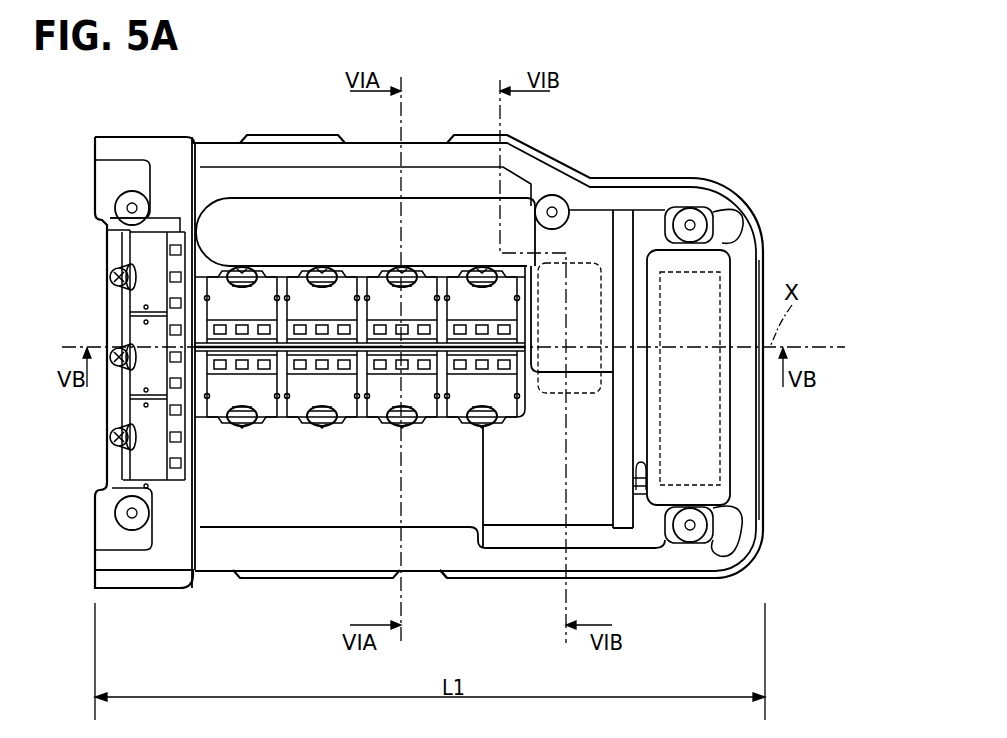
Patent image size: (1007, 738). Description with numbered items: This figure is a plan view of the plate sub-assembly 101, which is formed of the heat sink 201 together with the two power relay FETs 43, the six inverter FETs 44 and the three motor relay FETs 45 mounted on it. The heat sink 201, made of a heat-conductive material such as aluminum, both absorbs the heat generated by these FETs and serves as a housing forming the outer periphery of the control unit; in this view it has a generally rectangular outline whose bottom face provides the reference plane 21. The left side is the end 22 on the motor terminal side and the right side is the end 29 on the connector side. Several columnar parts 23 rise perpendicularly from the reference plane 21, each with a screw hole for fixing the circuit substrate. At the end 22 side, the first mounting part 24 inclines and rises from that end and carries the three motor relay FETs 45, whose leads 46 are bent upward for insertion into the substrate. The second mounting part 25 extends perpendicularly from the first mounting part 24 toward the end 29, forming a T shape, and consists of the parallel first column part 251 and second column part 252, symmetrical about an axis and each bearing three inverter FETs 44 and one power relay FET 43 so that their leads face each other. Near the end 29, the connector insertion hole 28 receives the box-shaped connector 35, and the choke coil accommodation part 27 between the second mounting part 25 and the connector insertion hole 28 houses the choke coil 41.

The plate sub-assembly 101 is at (772, 167).
The heat sink 201 is at (310, 557).
The reference plane 21 is at (525, 497).
The end 22 is at (113, 432).
The columnar part 23 is at (118, 208).
The first mounting part 24 is at (133, 397).
The second mounting part 25 is at (365, 274).
The first column part 251 is at (362, 395).
The second column part 252 is at (363, 293).
The choke coil accommodation part 27 is at (580, 248).
The connector insertion hole 28 is at (718, 492).
The end 29 is at (764, 433).
The connector 35 is at (720, 392).
The choke coil 41 is at (592, 258).
The power relay FET 43 is at (458, 297).
The inverter FET 44 is at (263, 293).
The motor relay FET 45 is at (142, 262).
The lead 46 is at (177, 247).